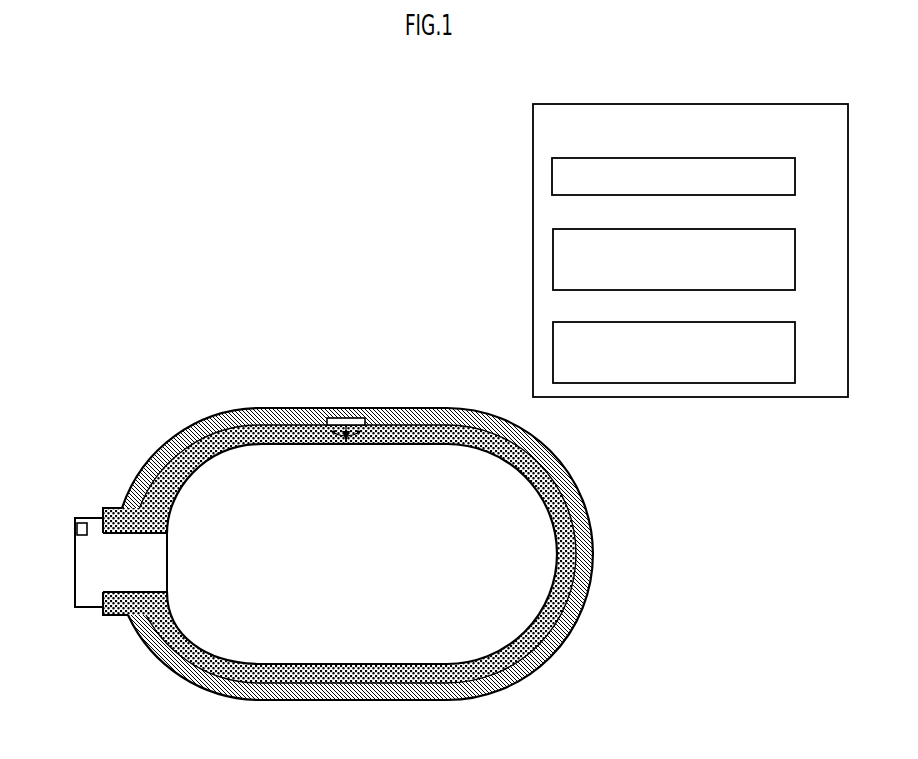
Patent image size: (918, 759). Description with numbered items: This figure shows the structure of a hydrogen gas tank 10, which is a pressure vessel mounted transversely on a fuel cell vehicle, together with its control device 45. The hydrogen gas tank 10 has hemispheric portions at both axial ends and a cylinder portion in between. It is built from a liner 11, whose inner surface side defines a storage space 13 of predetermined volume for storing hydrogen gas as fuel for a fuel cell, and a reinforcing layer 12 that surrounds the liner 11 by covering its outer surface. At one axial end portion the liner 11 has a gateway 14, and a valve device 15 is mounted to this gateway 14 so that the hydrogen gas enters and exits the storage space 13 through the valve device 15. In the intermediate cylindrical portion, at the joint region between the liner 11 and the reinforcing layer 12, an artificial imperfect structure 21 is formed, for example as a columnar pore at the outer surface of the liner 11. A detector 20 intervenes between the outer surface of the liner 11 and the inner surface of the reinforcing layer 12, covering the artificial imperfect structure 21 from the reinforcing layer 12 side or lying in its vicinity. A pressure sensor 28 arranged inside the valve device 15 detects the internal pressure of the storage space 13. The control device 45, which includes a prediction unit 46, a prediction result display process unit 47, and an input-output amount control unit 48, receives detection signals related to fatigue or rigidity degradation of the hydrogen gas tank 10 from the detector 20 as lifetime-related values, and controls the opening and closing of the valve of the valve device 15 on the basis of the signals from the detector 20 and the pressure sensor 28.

The hydrogen gas tank 10 is at (397, 420).
The liner 11 is at (554, 513).
The reinforcing layer 12 is at (566, 469).
The storage space 13 is at (540, 560).
The gateway 14 is at (126, 504).
The valve device 15 is at (75, 570).
The detector 20 is at (415, 290).
The artificial imperfect structure 21 is at (333, 417).
The pressure sensor 28 is at (77, 529).
The control device 45 is at (810, 137).
The prediction unit 46 is at (796, 163).
The prediction result display process unit 47 is at (796, 233).
The input-output amount control unit 48 is at (796, 326).